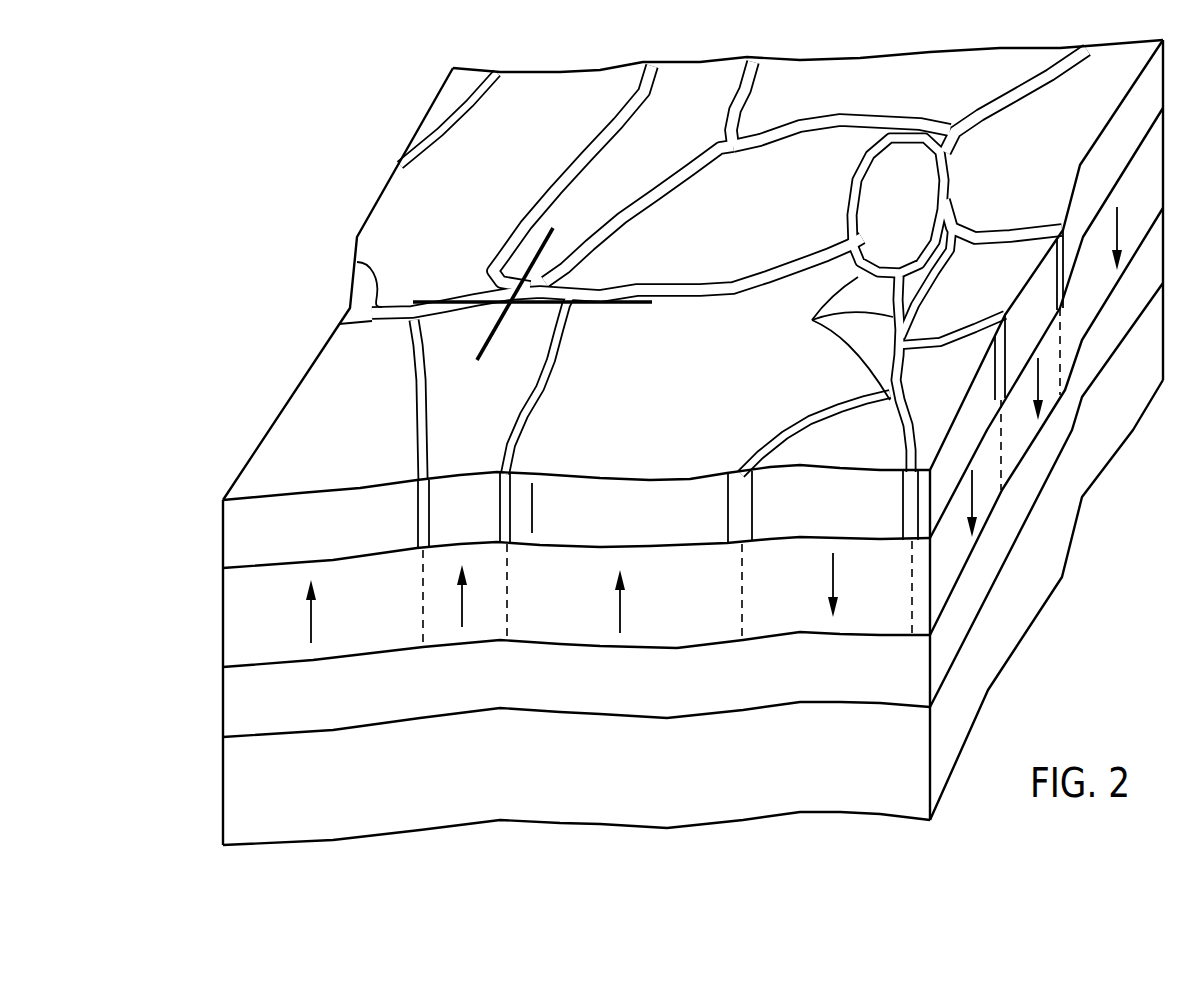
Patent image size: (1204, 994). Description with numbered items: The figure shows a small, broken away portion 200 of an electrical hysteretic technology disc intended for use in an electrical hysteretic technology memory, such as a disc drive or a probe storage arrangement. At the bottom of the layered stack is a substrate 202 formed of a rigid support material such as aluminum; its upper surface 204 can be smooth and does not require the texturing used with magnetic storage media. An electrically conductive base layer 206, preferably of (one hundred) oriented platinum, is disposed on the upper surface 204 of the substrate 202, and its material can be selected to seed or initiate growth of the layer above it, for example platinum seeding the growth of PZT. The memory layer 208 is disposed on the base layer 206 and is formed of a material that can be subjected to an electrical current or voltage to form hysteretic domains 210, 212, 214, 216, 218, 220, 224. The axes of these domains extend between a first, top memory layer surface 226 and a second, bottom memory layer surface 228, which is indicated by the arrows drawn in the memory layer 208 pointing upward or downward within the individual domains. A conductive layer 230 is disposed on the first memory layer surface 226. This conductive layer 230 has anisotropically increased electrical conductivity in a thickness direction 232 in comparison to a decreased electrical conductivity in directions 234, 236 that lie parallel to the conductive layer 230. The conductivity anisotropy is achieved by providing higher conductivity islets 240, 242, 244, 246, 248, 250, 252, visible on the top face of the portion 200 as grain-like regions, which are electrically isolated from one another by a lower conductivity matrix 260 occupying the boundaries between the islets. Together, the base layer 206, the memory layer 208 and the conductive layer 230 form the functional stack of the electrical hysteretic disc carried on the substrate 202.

The broken away portion of an electrical hysteretic technology disc 200 is at (282, 158).
The substrate 202 is at (287, 793).
The upper surface of the substrate 204 is at (248, 737).
The electrically conductive base layer 206 is at (309, 714).
The memory layer 208 is at (200, 607).
The hysteretic domain 210 is at (385, 642).
The hysteretic domain 212 is at (452, 573).
The hysteretic domain 214 is at (689, 625).
The hysteretic domain 216 is at (805, 605).
The hysteretic domain 218 is at (978, 497).
The hysteretic domain 220 is at (1018, 427).
The hysteretic domain 224 is at (1097, 277).
The first memory layer surface 226 is at (258, 568).
The second memory layer surface 228 is at (267, 665).
The conductive layer 230 is at (224, 503).
The thickness direction 232 is at (535, 503).
The direction parallel to the conductive layer 234 is at (485, 348).
The direction parallel to the conductive layer 236 is at (608, 304).
The higher conductivity islet 240 is at (356, 430).
The higher conductivity islet 242 is at (495, 431).
The higher conductivity islet 244 is at (760, 382).
The higher conductivity islet 246 is at (483, 194).
The higher conductivity islet 248 is at (662, 175).
The higher conductivity islet 250 is at (749, 234).
The higher conductivity islet 252 is at (918, 232).
The lower conductivity matrix 260 is at (812, 320).